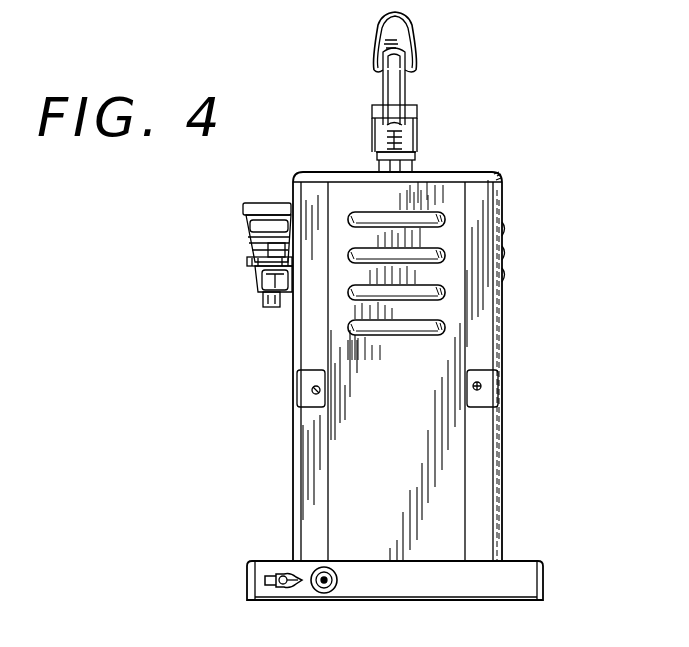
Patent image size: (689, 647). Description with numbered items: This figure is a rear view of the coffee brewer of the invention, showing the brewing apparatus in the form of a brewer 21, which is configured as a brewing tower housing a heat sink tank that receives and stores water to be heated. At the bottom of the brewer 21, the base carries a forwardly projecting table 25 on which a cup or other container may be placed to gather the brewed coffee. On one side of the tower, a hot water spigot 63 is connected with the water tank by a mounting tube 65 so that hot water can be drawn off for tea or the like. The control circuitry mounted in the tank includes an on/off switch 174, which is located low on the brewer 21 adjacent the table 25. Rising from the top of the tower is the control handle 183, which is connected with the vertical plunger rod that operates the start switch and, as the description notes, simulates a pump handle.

The brewer 21 is at (510, 357).
The table 25 is at (545, 570).
The hot water spigot 63 is at (262, 300).
The mounting tube 65 is at (272, 307).
The on/off switch 174 is at (283, 573).
The control handle 183 is at (406, 88).